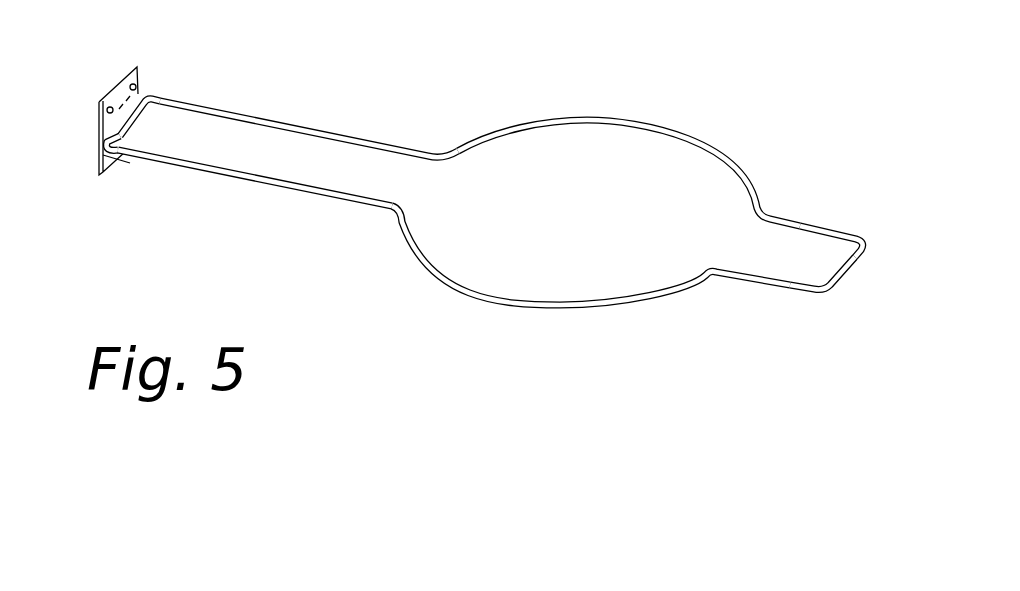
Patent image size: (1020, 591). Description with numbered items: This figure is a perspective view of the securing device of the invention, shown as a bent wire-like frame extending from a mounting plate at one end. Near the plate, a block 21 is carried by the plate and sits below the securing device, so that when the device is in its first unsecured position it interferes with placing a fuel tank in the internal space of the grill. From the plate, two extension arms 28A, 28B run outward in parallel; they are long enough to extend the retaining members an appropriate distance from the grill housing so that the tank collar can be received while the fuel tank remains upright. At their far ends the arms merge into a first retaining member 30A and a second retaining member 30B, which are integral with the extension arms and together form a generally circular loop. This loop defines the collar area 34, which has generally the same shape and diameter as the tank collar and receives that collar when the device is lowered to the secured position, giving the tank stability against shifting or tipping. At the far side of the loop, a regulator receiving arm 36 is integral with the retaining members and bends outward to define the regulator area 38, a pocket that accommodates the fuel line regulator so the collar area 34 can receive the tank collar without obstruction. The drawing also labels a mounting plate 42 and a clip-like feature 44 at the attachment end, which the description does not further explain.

The block 21 is at (121, 165).
The extension arm 28A is at (263, 177).
The extension arm 28B is at (305, 127).
The first retaining member 30A is at (495, 302).
The second retaining member 30B is at (653, 123).
The collar area 34 is at (573, 227).
The regulator receiving arm 36 is at (860, 263).
The regulator area 38 is at (805, 257).
The mounting plate 42 is at (127, 73).
The clip 44 is at (110, 133).